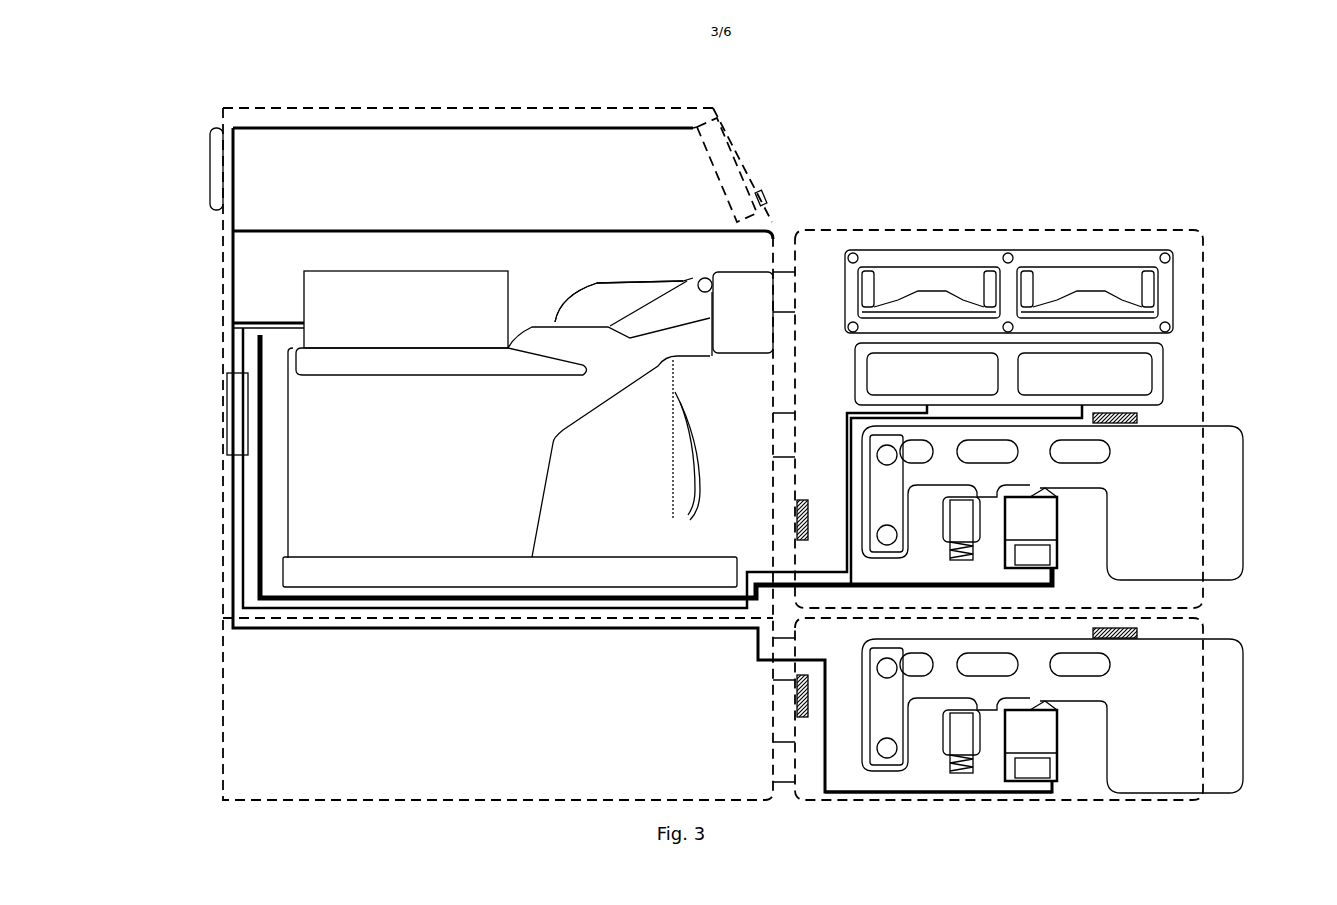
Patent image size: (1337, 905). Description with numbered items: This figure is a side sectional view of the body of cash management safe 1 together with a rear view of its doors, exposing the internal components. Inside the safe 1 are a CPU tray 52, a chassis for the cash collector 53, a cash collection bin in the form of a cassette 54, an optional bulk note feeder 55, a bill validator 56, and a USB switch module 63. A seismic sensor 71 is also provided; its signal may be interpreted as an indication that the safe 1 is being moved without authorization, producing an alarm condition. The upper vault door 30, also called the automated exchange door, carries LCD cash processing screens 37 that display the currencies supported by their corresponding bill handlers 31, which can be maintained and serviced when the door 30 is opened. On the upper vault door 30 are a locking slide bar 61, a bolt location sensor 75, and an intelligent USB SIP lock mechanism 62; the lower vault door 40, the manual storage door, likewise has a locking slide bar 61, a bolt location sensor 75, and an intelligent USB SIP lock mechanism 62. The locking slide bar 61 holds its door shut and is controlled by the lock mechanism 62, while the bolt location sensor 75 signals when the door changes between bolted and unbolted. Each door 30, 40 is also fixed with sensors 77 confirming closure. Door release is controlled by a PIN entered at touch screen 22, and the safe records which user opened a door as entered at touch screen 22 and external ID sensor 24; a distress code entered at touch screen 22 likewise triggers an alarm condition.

The cash management safe 1 is at (458, 100).
The touch screen 22 is at (719, 128).
The external ID sensor 24 is at (768, 185).
The upper vault door 30 is at (907, 231).
The bill handlers 31 is at (979, 263).
The LCD cash processing screens 37 is at (952, 373).
The lower vault door 40 is at (1092, 793).
The CPU tray 52 is at (331, 311).
The chassis for the cash collector 53 is at (365, 428).
The cassette 54 is at (638, 498).
The bulk note feeder 55 is at (756, 276).
The bill validator 56 is at (639, 291).
The locking slide bar 61 is at (1227, 661).
The intelligent USB SIP lock mechanism 62 is at (1052, 554).
The USB switch module 63 is at (232, 415).
The seismic sensor 71 is at (205, 139).
The bolt location sensor 75 is at (1126, 627).
The sensors 77 is at (796, 543).